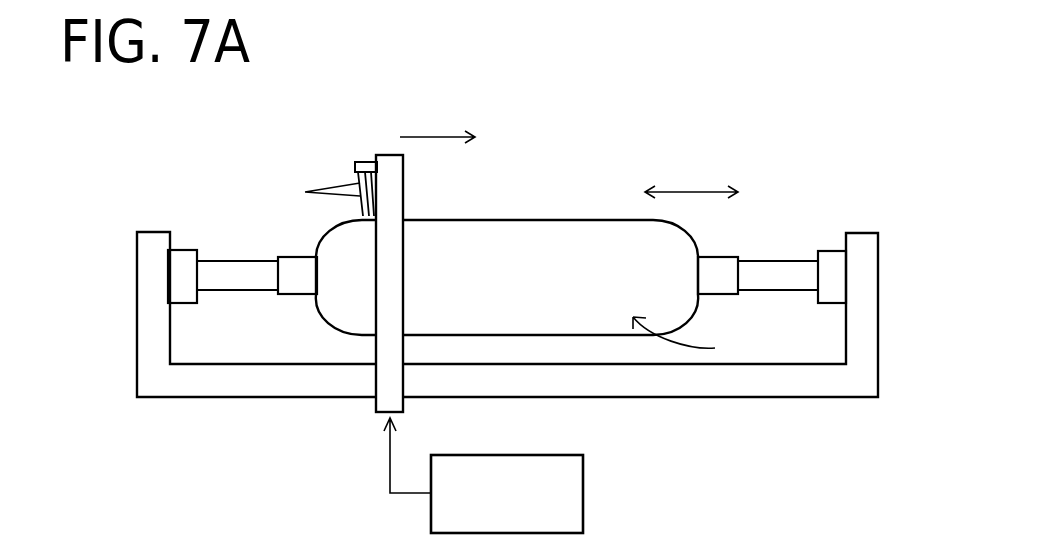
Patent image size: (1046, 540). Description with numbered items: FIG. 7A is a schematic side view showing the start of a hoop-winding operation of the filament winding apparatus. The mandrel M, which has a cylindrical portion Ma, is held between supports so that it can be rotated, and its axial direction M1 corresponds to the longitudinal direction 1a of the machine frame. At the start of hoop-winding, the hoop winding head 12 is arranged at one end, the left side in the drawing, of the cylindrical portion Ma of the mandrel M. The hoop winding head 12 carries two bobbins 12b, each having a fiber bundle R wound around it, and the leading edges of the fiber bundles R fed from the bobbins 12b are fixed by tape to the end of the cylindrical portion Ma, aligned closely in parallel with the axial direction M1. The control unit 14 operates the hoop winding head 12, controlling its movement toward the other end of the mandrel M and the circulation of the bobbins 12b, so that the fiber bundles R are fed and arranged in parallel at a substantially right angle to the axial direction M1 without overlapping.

The hoop winding head 12 is at (389, 162).
The bobbins 12b is at (366, 163).
The fiber bundle R is at (317, 193).
The cylindrical portion Ma is at (540, 218).
The axial direction of the mandrel M1 is at (700, 192).
The longitudinal direction of the machine frame 1a is at (507, 245).
The mandrel M is at (689, 338).
The control unit 14 is at (583, 493).